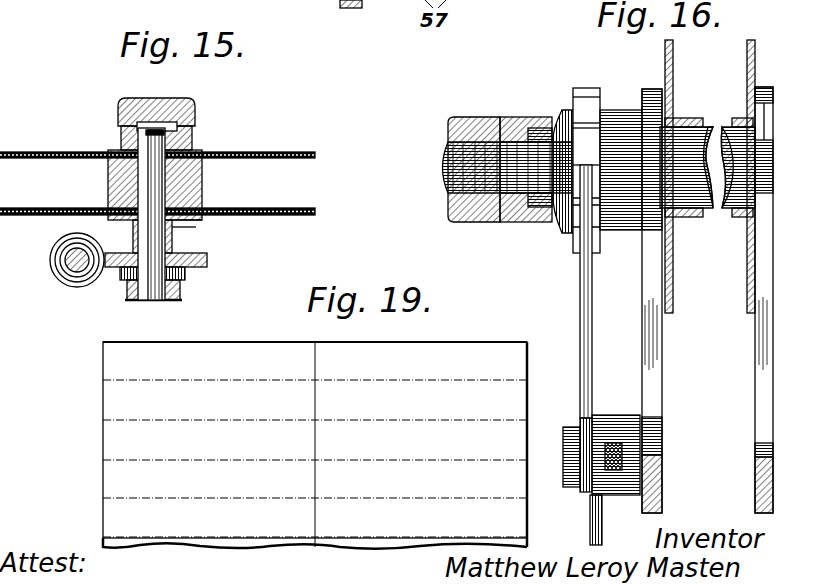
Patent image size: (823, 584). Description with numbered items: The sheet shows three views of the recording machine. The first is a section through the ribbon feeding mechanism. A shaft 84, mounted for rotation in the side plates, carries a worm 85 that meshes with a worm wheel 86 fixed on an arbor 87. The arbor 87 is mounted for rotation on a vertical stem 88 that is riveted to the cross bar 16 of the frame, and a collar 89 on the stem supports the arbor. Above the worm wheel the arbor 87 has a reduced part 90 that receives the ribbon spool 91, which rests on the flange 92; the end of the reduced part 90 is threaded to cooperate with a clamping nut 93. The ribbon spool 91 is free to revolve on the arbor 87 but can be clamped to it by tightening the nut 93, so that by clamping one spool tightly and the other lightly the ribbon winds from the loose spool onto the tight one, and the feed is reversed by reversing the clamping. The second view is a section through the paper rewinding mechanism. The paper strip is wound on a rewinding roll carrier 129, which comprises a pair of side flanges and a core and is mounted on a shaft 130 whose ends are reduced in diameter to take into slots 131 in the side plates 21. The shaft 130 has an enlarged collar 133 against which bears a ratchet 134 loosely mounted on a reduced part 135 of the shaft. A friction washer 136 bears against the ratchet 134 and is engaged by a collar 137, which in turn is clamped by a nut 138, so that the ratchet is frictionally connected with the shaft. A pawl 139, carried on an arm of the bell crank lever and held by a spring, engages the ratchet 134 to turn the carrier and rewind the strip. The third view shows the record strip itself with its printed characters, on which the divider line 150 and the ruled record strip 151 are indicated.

In FIG. 15, the cross bar 16 is at (180, 297).
In FIG. 15, the shaft 84 is at (77, 268).
In FIG. 15, the worm 85 is at (80, 235).
In FIG. 15, the worm wheel 86 is at (208, 265).
In FIG. 15, the arbor 87 is at (173, 242).
In FIG. 15, the vertical stem 88 is at (157, 235).
In FIG. 15, the collar 89 is at (187, 273).
In FIG. 15, the reduced part 90 is at (167, 170).
In FIG. 15, the ribbon spool 91 is at (253, 152).
In FIG. 15, the flange 92 is at (176, 218).
In FIG. 15, the clamping nut 93 is at (194, 116).
In FIG. 16, the side plates 21 is at (763, 371).
In FIG. 16, the rewinding roll carrier 129 is at (748, 62).
In FIG. 16, the shaft 130 is at (688, 124).
In FIG. 16, the slots 131 is at (747, 219).
In FIG. 16, the enlarged collar 133 is at (620, 110).
In FIG. 16, the ratchet 134 is at (588, 97).
In FIG. 16, the reduced part 135 is at (450, 150).
In FIG. 16, the friction washer 136 is at (567, 221).
In FIG. 16, the collar 137 is at (522, 117).
In FIG. 16, the nut 138 is at (472, 117).
In FIG. 16, the pawl 139 is at (585, 370).
In FIG. 19, the center divider line 150 is at (313, 523).
In FIG. 19, the record card 151 is at (113, 421).